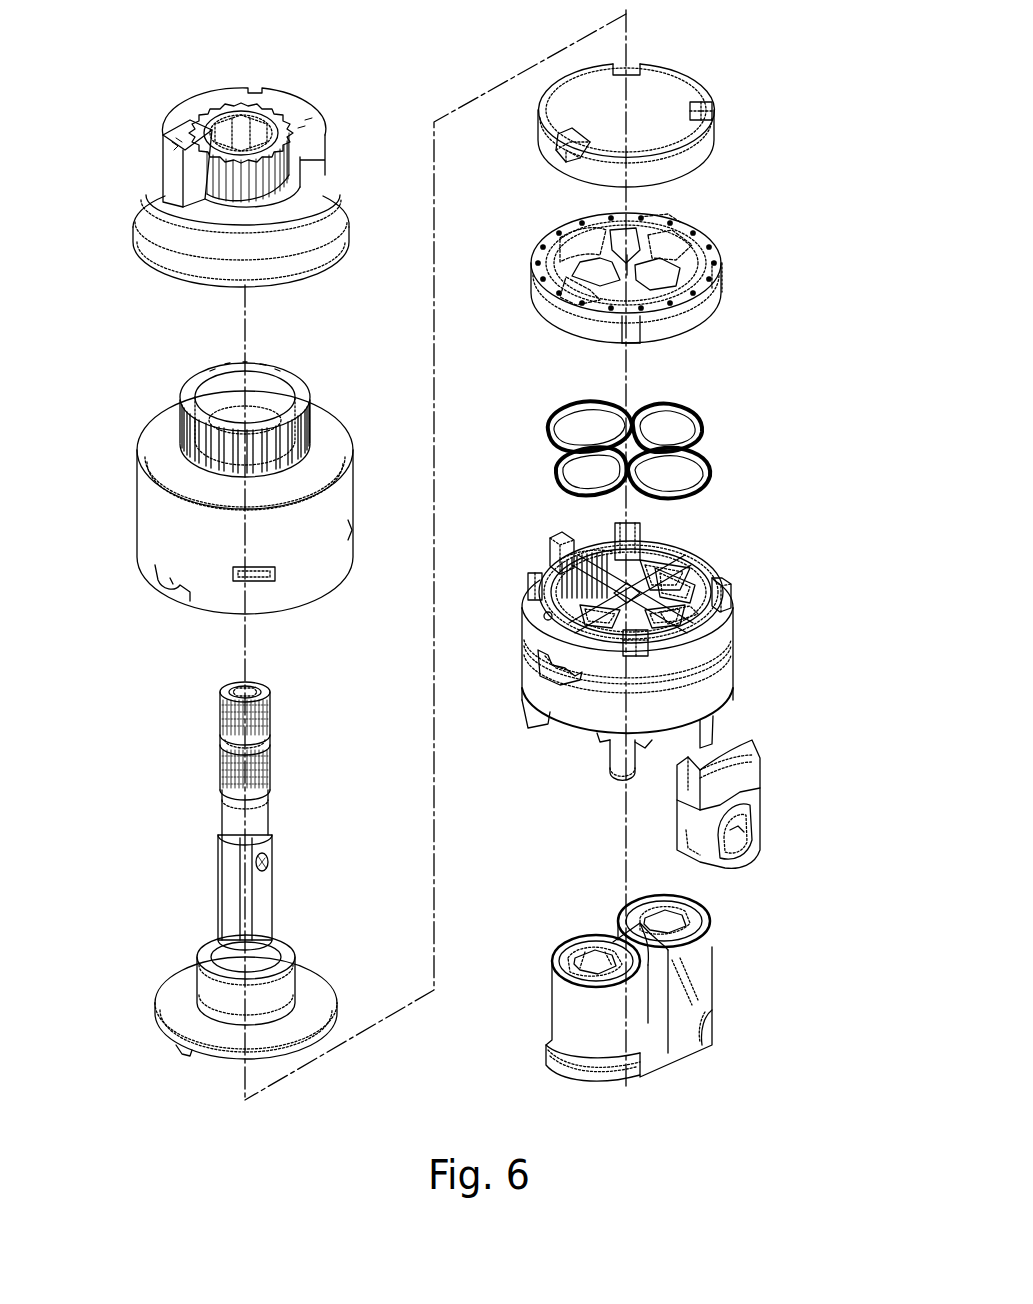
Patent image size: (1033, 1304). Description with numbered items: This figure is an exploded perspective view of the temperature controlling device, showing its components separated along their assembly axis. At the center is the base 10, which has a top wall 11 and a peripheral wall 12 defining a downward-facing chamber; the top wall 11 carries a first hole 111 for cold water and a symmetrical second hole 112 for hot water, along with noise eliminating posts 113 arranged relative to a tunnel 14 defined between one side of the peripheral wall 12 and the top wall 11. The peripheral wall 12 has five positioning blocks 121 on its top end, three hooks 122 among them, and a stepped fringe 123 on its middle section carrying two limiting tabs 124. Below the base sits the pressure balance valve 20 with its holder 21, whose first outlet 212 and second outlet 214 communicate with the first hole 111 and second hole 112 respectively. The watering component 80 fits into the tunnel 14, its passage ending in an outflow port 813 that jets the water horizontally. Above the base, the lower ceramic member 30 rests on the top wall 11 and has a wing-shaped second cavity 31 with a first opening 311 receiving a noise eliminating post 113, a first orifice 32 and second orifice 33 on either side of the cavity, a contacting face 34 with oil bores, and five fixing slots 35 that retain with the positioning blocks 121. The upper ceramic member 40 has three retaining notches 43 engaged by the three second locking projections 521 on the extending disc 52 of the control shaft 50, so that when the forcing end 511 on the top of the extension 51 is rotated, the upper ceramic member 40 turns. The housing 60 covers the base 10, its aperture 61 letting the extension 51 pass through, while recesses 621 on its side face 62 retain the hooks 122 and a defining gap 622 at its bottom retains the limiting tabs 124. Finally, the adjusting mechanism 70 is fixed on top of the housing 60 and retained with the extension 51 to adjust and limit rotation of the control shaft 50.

The base 10 is at (747, 627).
The top wall 11 is at (695, 567).
The peripheral wall 12 is at (610, 673).
The tunnel 14 is at (677, 620).
The first hole 111 is at (548, 618).
The second hole 112 is at (662, 577).
The noise eliminating posts 113 is at (593, 543).
The positioning blocks 121 is at (560, 542).
The hooks 122 is at (733, 603).
The stepped fringe 123 is at (677, 625).
The limiting tabs 124 is at (562, 653).
The pressure balance valve 20 is at (687, 1063).
The holder 21 is at (708, 967).
The first outlet 212 is at (613, 937).
The second outlet 214 is at (678, 918).
The lower ceramic member 30 is at (718, 237).
The second cavity 31 is at (613, 267).
The first opening 311 is at (607, 260).
The first orifice 32 is at (587, 282).
The second orifice 33 is at (670, 242).
The contacting face 34 is at (653, 215).
The fixing slots 35 is at (717, 273).
The upper ceramic member 40 is at (680, 62).
The retaining notches 43 is at (700, 108).
The control shaft 50 is at (190, 802).
The extension 51 is at (225, 885).
The forcing end 511 is at (273, 715).
The extending disc 52 is at (308, 975).
The second locking projections 521 is at (187, 1050).
The housing 60 is at (160, 385).
The aperture 61 is at (272, 398).
The side face 62 is at (353, 493).
The recesses 621 is at (257, 573).
The defining gap 622 is at (173, 582).
The adjusting mechanism 70 is at (168, 105).
The watering component 80 is at (770, 785).
The outflow port 813 is at (738, 838).